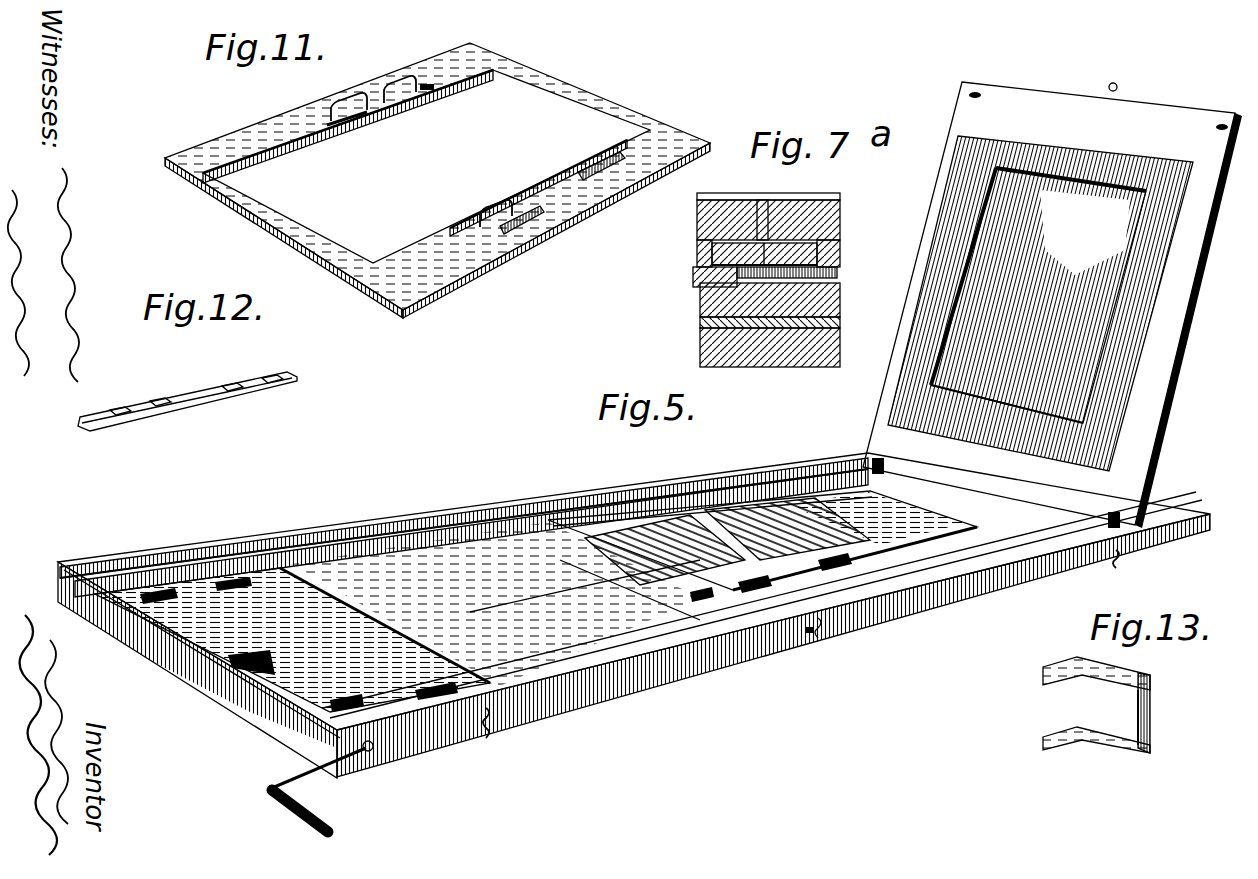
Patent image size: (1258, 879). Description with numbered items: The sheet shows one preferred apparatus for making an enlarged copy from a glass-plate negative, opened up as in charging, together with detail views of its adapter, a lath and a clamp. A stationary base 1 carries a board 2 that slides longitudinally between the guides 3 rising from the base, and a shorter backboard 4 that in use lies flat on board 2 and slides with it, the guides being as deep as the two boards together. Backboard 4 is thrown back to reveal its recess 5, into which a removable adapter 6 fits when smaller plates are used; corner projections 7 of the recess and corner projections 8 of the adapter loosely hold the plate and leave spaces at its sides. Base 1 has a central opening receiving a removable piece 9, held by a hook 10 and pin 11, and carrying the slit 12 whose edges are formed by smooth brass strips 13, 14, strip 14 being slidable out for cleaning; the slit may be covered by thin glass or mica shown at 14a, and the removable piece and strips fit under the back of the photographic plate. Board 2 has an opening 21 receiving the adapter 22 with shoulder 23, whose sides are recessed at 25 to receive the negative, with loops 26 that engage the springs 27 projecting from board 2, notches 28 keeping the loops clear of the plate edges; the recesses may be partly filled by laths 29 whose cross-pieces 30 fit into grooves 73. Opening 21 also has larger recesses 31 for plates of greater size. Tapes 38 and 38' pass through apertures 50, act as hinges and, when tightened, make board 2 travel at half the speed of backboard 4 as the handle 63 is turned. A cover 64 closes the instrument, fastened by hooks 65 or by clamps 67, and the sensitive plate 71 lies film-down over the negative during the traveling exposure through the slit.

In FIG. 5, the base 1 is at (300, 690).
In FIG. 5, the board 2 is at (552, 690).
In FIG. 5, the guides 3 is at (405, 528).
In FIG. 7A, the backboard 4 is at (838, 300).
In FIG. 5, the backboard 4 is at (1155, 403).
In FIG. 5, the recess 5 is at (1050, 290).
In FIG. 7A, the adapter 6 is at (770, 348).
In FIG. 5, the adapter 6 is at (930, 334).
In FIG. 5, the corner projections 7 is at (1110, 471).
In FIG. 5, the corner projections 8 is at (1086, 425).
In FIG. 7A, the removable piece 9 is at (832, 254).
In FIG. 5, the removable piece 9 is at (848, 632).
In FIG. 5, the hook 10 is at (806, 640).
In FIG. 5, the pin 11 is at (822, 640).
In FIG. 7A, the slit 12 is at (762, 202).
In FIG. 7A, the edge strip 13 is at (720, 248).
In FIG. 5, the edge strip 13 is at (700, 642).
In FIG. 7A, the removable edge strip 14 is at (820, 230).
In FIG. 5, the removable edge strip 14 is at (700, 597).
In FIG. 7A, the slit cover 14a is at (785, 240).
In FIG. 5, the opening 21 is at (950, 580).
In FIG. 11, the adapter 22 is at (560, 208).
In FIG. 5, the adapter 22 is at (908, 580).
In FIG. 11, the shoulder 23 is at (353, 273).
In FIG. 11, the recesses 25 is at (353, 98).
In FIG. 11, the loops 26 is at (397, 102).
In FIG. 5, the loops 26 is at (767, 578).
In FIG. 5, the springs 27 is at (645, 540).
In FIG. 11, the notches 28 is at (585, 172).
In FIG. 11, the laths 29 is at (447, 88).
In FIG. 12, the laths 29 is at (212, 404).
In FIG. 12, the cross-pieces 30 is at (272, 376).
In FIG. 5, the recesses 31 is at (545, 535).
In FIG. 5, the tape 38 is at (896, 466).
In FIG. 5, the tape 38' is at (1100, 507).
In FIG. 5, the apertures 50 is at (976, 92).
In FIG. 5, the handle 63 is at (340, 800).
In FIG. 7A, the cover 64 is at (828, 352).
In FIG. 5, the hooks 65 is at (488, 738).
In FIG. 13, the clamps 67 is at (1150, 708).
In FIG. 5, the sensitive plate 71 is at (877, 519).
In FIG. 11, the grooves 73 is at (427, 93).